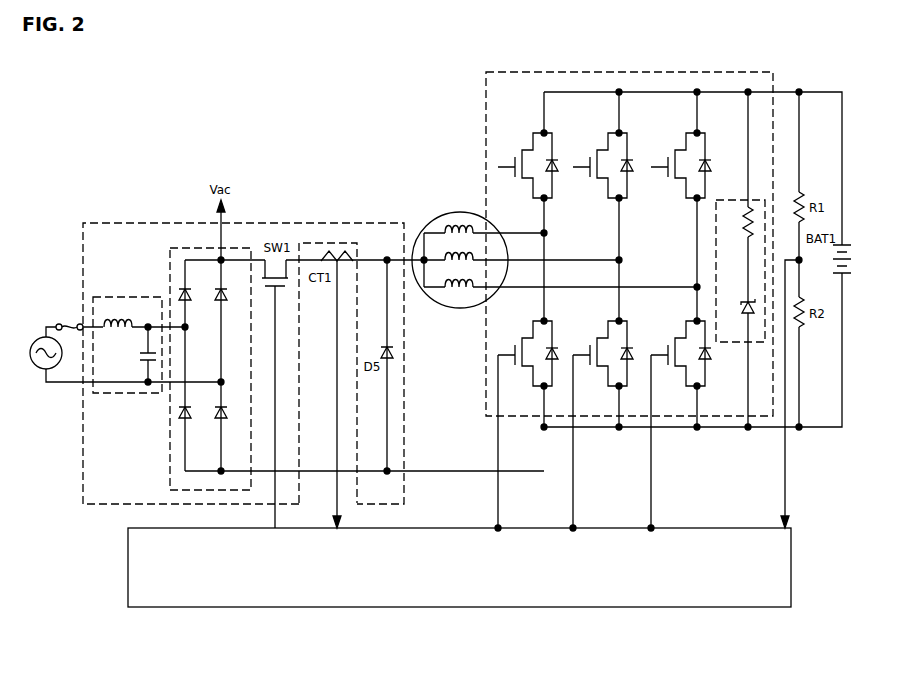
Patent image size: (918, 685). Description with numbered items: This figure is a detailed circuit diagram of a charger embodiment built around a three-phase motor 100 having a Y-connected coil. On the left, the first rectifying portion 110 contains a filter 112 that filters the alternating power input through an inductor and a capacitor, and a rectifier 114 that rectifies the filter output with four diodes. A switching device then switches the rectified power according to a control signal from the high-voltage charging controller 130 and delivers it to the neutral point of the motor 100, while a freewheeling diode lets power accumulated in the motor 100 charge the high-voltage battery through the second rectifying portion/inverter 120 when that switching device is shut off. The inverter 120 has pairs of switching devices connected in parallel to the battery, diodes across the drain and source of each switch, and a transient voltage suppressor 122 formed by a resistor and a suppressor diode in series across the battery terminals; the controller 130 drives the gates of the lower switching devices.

The 3-phase motor 100 is at (442, 213).
The first rectifying portion 110 is at (83, 447).
The filter 112 is at (140, 393).
The rectifier 114 is at (170, 478).
The second rectifying portion/inverter 120 is at (486, 106).
The transient voltage suppressor 122 is at (763, 342).
The high-voltage charging controller 130 is at (466, 607).